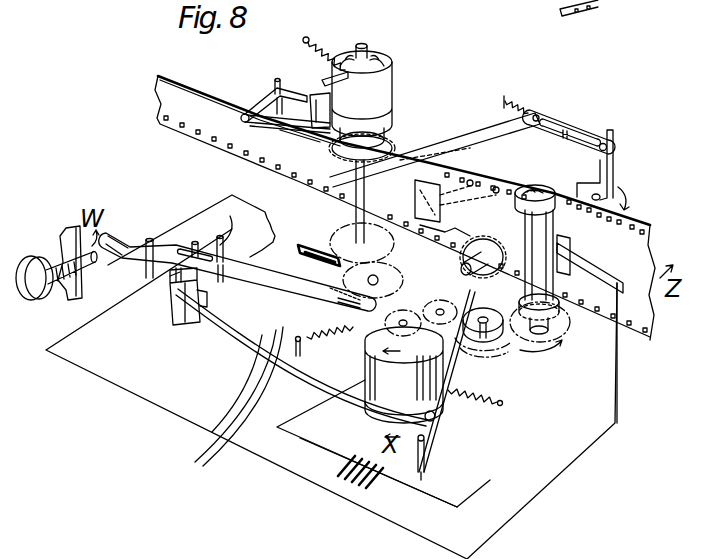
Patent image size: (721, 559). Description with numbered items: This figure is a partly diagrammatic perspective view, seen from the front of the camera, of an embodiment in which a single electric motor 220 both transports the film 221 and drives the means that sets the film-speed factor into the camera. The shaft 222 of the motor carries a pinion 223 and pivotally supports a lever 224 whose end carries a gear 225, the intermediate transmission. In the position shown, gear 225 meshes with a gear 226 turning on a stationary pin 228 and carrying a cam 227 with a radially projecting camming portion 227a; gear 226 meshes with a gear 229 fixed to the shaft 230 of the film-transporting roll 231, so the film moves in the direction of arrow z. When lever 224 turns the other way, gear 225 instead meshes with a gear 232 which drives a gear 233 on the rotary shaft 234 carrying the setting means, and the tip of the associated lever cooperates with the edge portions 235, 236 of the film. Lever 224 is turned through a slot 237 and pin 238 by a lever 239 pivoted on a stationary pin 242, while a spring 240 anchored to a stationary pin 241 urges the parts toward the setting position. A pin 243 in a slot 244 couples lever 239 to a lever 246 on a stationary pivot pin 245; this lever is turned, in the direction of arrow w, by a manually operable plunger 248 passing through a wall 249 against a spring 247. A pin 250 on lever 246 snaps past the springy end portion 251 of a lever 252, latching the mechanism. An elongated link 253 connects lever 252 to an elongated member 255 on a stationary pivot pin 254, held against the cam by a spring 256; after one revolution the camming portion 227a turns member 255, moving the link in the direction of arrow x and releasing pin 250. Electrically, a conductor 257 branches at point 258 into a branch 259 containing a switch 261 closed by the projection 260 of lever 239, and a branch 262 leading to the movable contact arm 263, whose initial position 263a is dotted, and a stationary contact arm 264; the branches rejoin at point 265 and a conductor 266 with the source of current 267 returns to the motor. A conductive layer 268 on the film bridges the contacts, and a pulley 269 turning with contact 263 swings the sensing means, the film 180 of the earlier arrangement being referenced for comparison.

The film 180 is at (546, 2).
The electric motor 220 is at (365, 408).
The film 221 is at (633, 228).
The motor shaft 222 is at (368, 385).
The pinion 223 is at (395, 268).
The lever 224 is at (353, 358).
The gear (intermediate transmission means) 225 is at (372, 388).
The gear 226 is at (507, 356).
The cam 227 is at (500, 330).
The camming portion 227a is at (500, 363).
The stationary pin 228 is at (477, 350).
The gear 229 is at (552, 336).
The shaft 230 is at (618, 277).
The film-transporting roll 231 is at (536, 190).
The gear 232 is at (460, 240).
The gear 233 is at (345, 226).
The rotary shaft 234 is at (318, 176).
The edge portion of film 235 is at (200, 90).
The edge portion of film 236 is at (630, 203).
The slot 237 is at (322, 302).
The pin 238 is at (292, 306).
The lever 239 is at (217, 357).
The spring 240 is at (302, 357).
The stationary pin 241 is at (243, 401).
The stationary pivot pin 242 is at (227, 221).
The pin 243 is at (195, 243).
The slot 244 is at (217, 237).
The stationary pivot pin 245 is at (150, 240).
The lever 246 is at (113, 240).
The spring 247 is at (63, 292).
The manually operable plunger 248 is at (37, 302).
The wall 249 is at (67, 228).
The pin 250 is at (170, 278).
The springy end portion 251 is at (176, 310).
The lever 252 is at (223, 327).
The elongated link 253 is at (247, 387).
The stationary pivot pin 254 is at (430, 480).
The elongated member 255 is at (437, 436).
The spring 256 is at (475, 406).
The electrical conductor 257 is at (195, 462).
The branch point 258 is at (212, 432).
The branch conductor 259 is at (250, 207).
The projection 260 is at (340, 242).
The switch 261 is at (300, 247).
The branch conductor 262 is at (263, 353).
The movable contact arm (sensing means) 263 is at (440, 211).
The initial position of sensing means 263a is at (437, 194).
The stationary contact arm 264 is at (604, 273).
The junction point 265 is at (497, 531).
The conductor 266 is at (450, 507).
The source of current 267 is at (380, 483).
The layer of electrically conductive material 268 is at (571, 248).
The pulley 269 is at (487, 266).